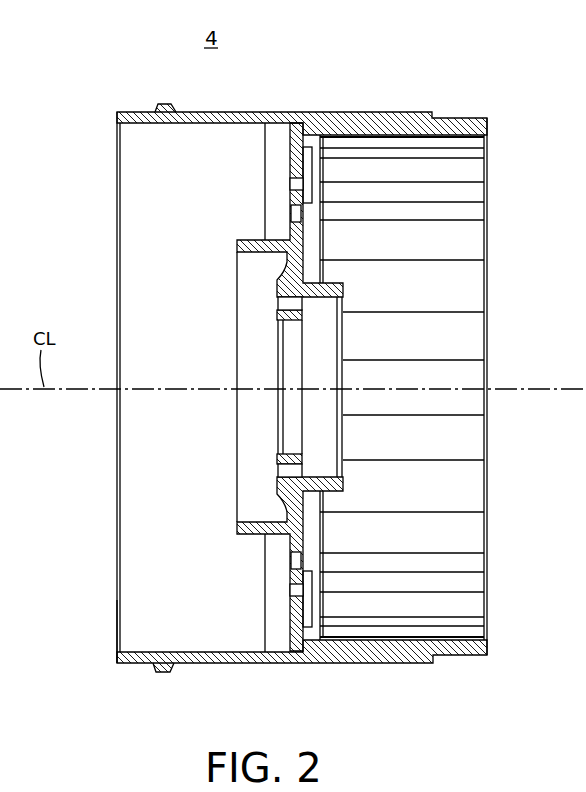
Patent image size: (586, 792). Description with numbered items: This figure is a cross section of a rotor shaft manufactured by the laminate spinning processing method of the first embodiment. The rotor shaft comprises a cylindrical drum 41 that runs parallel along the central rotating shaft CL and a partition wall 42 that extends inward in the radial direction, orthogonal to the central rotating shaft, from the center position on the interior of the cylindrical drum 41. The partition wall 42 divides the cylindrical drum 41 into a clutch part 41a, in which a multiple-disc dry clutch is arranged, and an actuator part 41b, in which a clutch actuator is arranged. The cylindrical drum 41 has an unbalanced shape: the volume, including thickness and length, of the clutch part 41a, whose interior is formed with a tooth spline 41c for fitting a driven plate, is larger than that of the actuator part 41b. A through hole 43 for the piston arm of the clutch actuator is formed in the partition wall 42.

The cylindrical drum 41 is at (408, 112).
The clutch part 41a is at (407, 657).
The actuator part 41b is at (200, 666).
The tooth spline 41c is at (447, 638).
The partition wall 42 is at (286, 585).
The through hole 43 is at (292, 220).